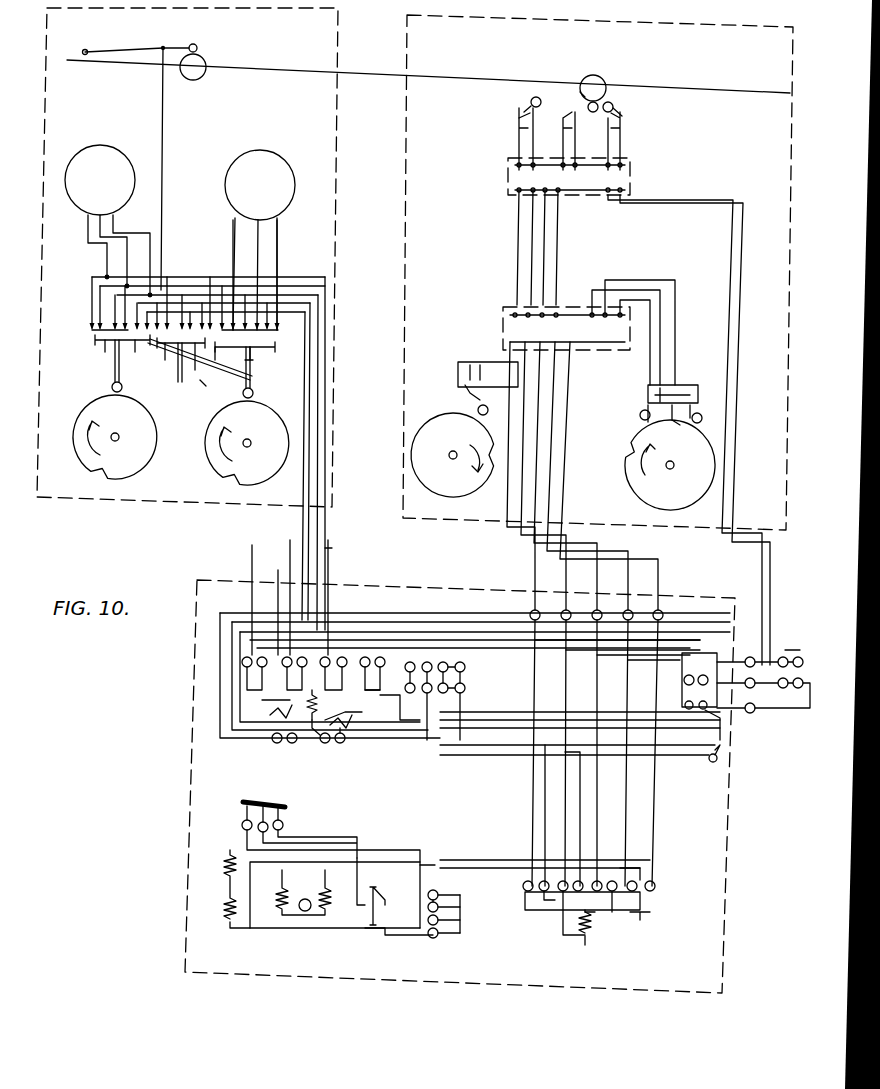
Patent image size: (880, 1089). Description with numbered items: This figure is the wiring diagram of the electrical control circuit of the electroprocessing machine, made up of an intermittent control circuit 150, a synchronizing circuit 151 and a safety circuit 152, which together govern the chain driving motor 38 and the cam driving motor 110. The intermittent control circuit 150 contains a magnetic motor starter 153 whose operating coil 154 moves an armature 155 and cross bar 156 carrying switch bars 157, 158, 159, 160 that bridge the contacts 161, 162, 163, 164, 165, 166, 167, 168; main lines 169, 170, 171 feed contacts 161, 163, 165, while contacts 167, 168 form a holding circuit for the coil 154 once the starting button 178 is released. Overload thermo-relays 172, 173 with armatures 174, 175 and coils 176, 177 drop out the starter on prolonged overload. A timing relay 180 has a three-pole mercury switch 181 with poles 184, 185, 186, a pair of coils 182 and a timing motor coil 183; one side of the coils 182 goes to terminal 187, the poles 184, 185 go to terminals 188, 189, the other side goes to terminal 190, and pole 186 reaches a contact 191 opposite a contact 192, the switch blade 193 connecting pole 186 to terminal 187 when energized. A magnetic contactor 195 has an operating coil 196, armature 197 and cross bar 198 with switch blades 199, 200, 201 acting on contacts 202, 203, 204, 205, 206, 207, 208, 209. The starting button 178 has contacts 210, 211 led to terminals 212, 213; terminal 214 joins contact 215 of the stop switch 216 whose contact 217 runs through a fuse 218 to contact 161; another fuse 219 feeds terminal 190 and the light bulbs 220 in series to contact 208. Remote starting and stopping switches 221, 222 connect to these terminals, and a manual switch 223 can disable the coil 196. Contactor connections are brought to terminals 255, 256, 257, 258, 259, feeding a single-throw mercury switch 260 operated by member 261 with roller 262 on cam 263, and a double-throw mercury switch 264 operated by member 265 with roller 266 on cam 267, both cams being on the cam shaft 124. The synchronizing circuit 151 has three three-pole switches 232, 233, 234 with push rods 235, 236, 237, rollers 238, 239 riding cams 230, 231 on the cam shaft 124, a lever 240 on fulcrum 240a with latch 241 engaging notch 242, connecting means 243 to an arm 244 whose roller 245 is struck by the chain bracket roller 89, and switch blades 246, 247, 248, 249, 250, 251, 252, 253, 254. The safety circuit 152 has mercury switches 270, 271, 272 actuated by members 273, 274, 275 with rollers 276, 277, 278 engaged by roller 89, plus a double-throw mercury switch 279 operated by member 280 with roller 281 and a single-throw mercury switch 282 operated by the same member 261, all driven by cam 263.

The chain driving motor 38 is at (282, 158).
The chain bracket roller 89 is at (203, 77).
The cam driving motor 110 is at (105, 145).
The cam shaft 124 is at (115, 432).
The intermittent control circuit 150 is at (195, 781).
The synchronizing circuit 151 is at (128, 501).
The safety circuit 152 is at (432, 508).
The magnetic motor starter 153 is at (272, 755).
The operating coil 154 is at (310, 722).
The armature 155 is at (325, 744).
The cross bar 156 is at (372, 692).
The switch bar 157 is at (245, 683).
The switch bar 158 is at (288, 685).
The switch bar 159 is at (330, 688).
The switch bar 160 is at (385, 676).
The contact 161 is at (241, 661).
The contact 162 is at (262, 656).
The contact 163 is at (278, 590).
The contact 164 is at (305, 656).
The contact 165 is at (328, 656).
The contact 166 is at (344, 656).
The contact 167 is at (367, 656).
The contact 168 is at (383, 656).
The main line 169 is at (252, 555).
The main line 170 is at (290, 541).
The main line 171 is at (330, 550).
The overload thermo-relay 172 is at (278, 703).
The overload thermo-relay 173 is at (350, 713).
The armature 174 is at (270, 718).
The armature 175 is at (350, 724).
The coil 176 is at (272, 742).
The coil 177 is at (345, 742).
The starting button 178 is at (696, 660).
The timing relay 180 is at (336, 835).
The three-pole mercury switch 181 is at (262, 790).
The coils 182 is at (226, 886).
The timing motor coil 183 is at (300, 890).
The pole 184 is at (243, 823).
The pole 185 is at (258, 830).
The pole 186 is at (283, 826).
The terminal 187 is at (438, 937).
The terminal 188 is at (460, 920).
The terminal 189 is at (460, 907).
The terminal 190 is at (460, 895).
The contact 191 is at (362, 903).
The contact 192 is at (380, 908).
The switch blade 193 is at (365, 930).
The magnetic contactor 195 is at (535, 915).
The operating coil 196 is at (588, 950).
The armature 197 is at (596, 920).
The cross bar 198 is at (640, 912).
The switch blade 199 is at (540, 896).
The switch blade 200 is at (612, 880).
The switch blade 201 is at (645, 913).
The contact 202 is at (523, 886).
The contact 203 is at (560, 893).
The contact 204 is at (576, 893).
The contact 205 is at (565, 940).
The contact 206 is at (596, 892).
The contact 207 is at (643, 870).
The contact 208 is at (638, 886).
The contact 209 is at (655, 888).
The contact 210 is at (686, 674).
The contact 211 is at (706, 674).
The terminal 212 is at (755, 660).
The terminal 213 is at (756, 680).
The terminal 214 is at (754, 712).
The contact 215 is at (689, 710).
The stop switch 216 is at (705, 710).
The contact 217 is at (725, 720).
The fuse 218 is at (402, 703).
The fuse 219 is at (430, 670).
The incandescent light bulbs 220 is at (466, 688).
The starting switch 221 is at (795, 657).
The stopping switch 222 is at (798, 688).
The manual switch 223 is at (714, 764).
The cam 230 is at (75, 441).
The cam 231 is at (208, 446).
The three-pole switch 232 is at (95, 342).
The three-pole switch 233 is at (200, 346).
The three-pole switch 234 is at (276, 348).
The push rod 235 is at (114, 376).
The push rod 236 is at (179, 384).
The push rod 237 is at (255, 385).
The roller 238 is at (122, 387).
The roller 239 is at (254, 395).
The lever 240 is at (214, 378).
The fulcrum 240a is at (210, 395).
The tripping member or latch 241 is at (258, 360).
The notch 242 is at (258, 368).
The connecting means 243 is at (162, 145).
The arm 244 is at (118, 45).
The roller 245 is at (196, 47).
The switch blade 246 is at (92, 333).
The switch blade 247 is at (105, 350).
The switch blade 248 is at (135, 350).
The switch blade 249 is at (165, 355).
The switch blade 250 is at (200, 372).
The switch blade 251 is at (218, 350).
The switch blade 252 is at (240, 290).
The switch blade 253 is at (280, 285).
The switch blade 254 is at (276, 335).
The terminal 255 is at (530, 615).
The terminal 256 is at (565, 609).
The terminal 257 is at (598, 609).
The terminal 258 is at (630, 609).
The terminal 259 is at (660, 609).
The single-throw mercury switch 260 is at (680, 380).
The member 261 is at (690, 424).
The operating roller 262 is at (700, 424).
The cam 263 is at (682, 495).
The double-throw mercury switch 264 is at (468, 365).
The member 265 is at (466, 398).
The roller 266 is at (480, 415).
The cam 267 is at (465, 478).
The single-throw mercury switch 270 is at (519, 122).
The single-throw mercury switch 271 is at (565, 127).
The single-throw mercury switch 272 is at (622, 122).
The member 273 is at (526, 100).
The member 274 is at (588, 107).
The member 275 is at (618, 108).
The roller 276 is at (538, 96).
The roller 277 is at (582, 86).
The roller 278 is at (612, 102).
The double-throw mercury switch 279 is at (652, 405).
The member 280 is at (640, 420).
The roller 281 is at (640, 428).
The single-throw mercury switch 282 is at (672, 420).